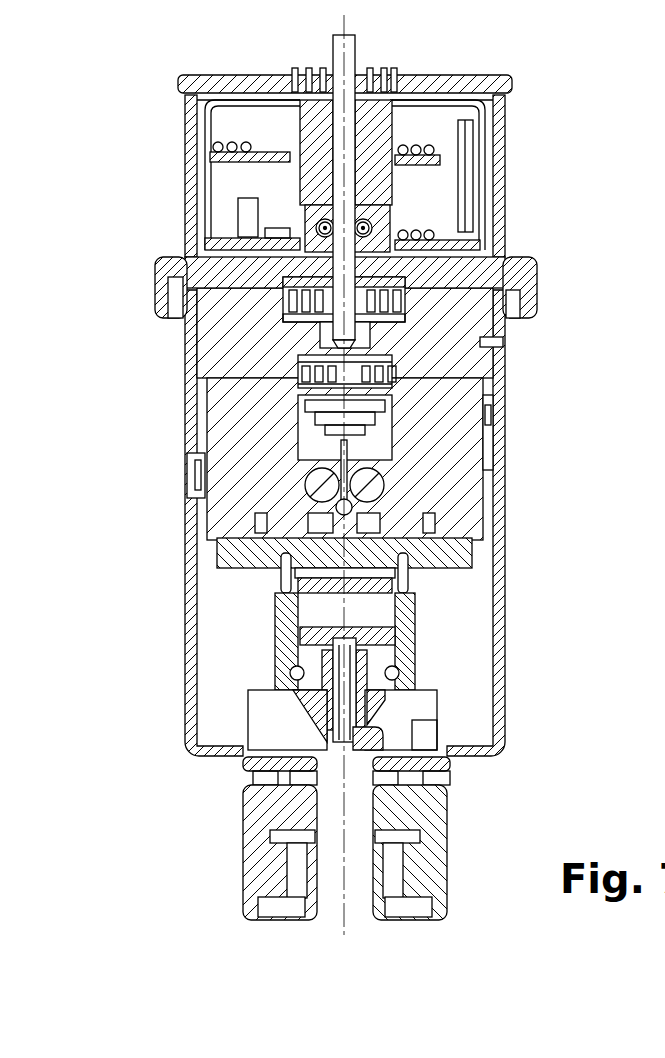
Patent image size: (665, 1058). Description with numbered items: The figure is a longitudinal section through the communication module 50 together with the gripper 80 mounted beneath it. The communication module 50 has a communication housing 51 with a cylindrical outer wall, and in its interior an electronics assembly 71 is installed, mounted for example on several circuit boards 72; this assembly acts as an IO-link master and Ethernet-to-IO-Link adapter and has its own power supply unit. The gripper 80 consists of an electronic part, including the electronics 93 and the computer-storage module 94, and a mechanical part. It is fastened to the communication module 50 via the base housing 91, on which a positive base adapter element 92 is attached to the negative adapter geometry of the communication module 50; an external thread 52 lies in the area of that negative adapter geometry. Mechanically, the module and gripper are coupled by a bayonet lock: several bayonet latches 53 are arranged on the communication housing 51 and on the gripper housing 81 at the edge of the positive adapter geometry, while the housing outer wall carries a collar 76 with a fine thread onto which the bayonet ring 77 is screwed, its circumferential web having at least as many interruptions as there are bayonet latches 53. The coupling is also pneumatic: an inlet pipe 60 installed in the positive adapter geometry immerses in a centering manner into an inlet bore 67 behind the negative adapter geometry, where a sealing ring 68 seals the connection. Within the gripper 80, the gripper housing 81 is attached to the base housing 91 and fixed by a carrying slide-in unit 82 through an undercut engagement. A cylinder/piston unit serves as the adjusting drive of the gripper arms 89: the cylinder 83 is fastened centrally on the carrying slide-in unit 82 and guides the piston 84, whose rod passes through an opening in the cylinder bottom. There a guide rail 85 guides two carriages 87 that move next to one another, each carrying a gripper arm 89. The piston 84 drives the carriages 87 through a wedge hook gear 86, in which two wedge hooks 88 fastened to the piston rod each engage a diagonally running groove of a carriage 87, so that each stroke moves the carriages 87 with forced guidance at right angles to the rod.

The communication module 50 is at (183, 165).
The communication housing 51 is at (190, 193).
The external thread 52 is at (513, 282).
The bayonet latches 53 is at (182, 88).
The inlet pipe 60 is at (337, 60).
The inlet bore 67 is at (358, 240).
The sealing ring 68 is at (365, 228).
The electronics assembly 71 is at (455, 188).
The circuit boards 72 is at (467, 158).
The collar 76 is at (508, 273).
The bayonet ring 77 is at (160, 285).
The gripper 80 is at (183, 480).
The gripper housing 81 is at (192, 640).
The carrying slide-in unit 82 is at (462, 505).
The cylinder 83 is at (402, 610).
The piston 84 is at (376, 640).
The guide rail 85 is at (400, 712).
The wedge hook gear 86 is at (390, 733).
The carriage 87 is at (268, 725).
The wedge hook 88 is at (372, 740).
The gripper arms 89 is at (388, 855).
The base housing 91 is at (218, 353).
The base adapter element 92 is at (442, 288).
The electronics 93 is at (390, 428).
The computer-storage module 94 is at (340, 437).